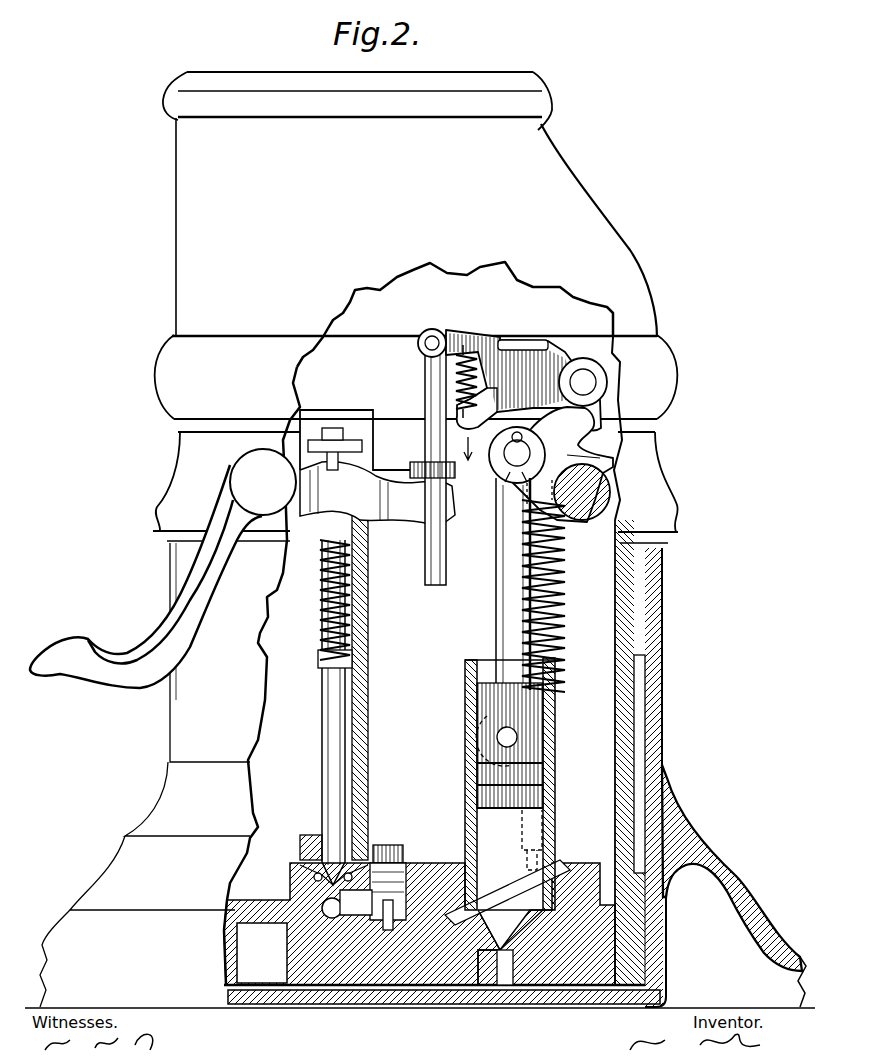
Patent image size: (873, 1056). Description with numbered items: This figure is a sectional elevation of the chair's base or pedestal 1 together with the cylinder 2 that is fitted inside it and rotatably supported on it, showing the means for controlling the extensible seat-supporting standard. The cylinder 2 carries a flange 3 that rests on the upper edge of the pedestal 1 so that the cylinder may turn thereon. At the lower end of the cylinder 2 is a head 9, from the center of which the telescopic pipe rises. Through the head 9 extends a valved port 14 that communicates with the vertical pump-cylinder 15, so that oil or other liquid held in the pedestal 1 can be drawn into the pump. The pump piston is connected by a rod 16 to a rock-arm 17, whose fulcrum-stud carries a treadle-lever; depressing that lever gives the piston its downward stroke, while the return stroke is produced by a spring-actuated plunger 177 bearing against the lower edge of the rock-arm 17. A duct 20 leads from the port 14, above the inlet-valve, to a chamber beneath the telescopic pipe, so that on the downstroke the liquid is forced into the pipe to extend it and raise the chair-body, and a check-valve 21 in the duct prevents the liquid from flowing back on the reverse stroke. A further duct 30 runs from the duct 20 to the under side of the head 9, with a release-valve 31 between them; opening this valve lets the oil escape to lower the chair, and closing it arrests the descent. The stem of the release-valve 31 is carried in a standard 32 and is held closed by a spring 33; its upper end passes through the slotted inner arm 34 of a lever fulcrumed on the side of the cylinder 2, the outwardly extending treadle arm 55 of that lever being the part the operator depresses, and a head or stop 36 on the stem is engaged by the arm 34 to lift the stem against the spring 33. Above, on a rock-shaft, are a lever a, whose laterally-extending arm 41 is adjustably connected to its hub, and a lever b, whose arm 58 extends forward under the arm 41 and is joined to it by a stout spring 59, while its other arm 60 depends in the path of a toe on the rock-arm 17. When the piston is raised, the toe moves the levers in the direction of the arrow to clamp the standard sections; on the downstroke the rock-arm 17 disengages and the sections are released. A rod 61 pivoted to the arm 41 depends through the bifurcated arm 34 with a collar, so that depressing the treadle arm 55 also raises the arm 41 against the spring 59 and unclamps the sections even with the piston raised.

The cylindrical base or pedestal 1 is at (105, 856).
The cylinder 2 is at (630, 610).
The flange 3 is at (680, 515).
The head 9 is at (585, 972).
The valved port 14 is at (500, 975).
The pump-cylinder 15 is at (530, 828).
The rod 16 is at (506, 568).
The rock-arm 17 is at (600, 458).
The spring-actuated plunger 177 is at (553, 600).
The duct 20 is at (332, 918).
The check-valve 21 is at (386, 935).
The duct 30 is at (261, 942).
The release-valve 31 is at (300, 866).
The standard 32 is at (362, 752).
The spring 33 is at (320, 585).
The slotted inner arm 34 is at (388, 510).
The head or stop 36 is at (320, 428).
The laterally-extending arm 41 is at (508, 385).
The hand lever 55 is at (118, 680).
The lever arm 58 is at (551, 464).
The spring 59 is at (455, 380).
The lever arm 60 is at (612, 410).
The rod 61 is at (425, 422).
The lever a is at (195, 378).
The lever b is at (215, 482).